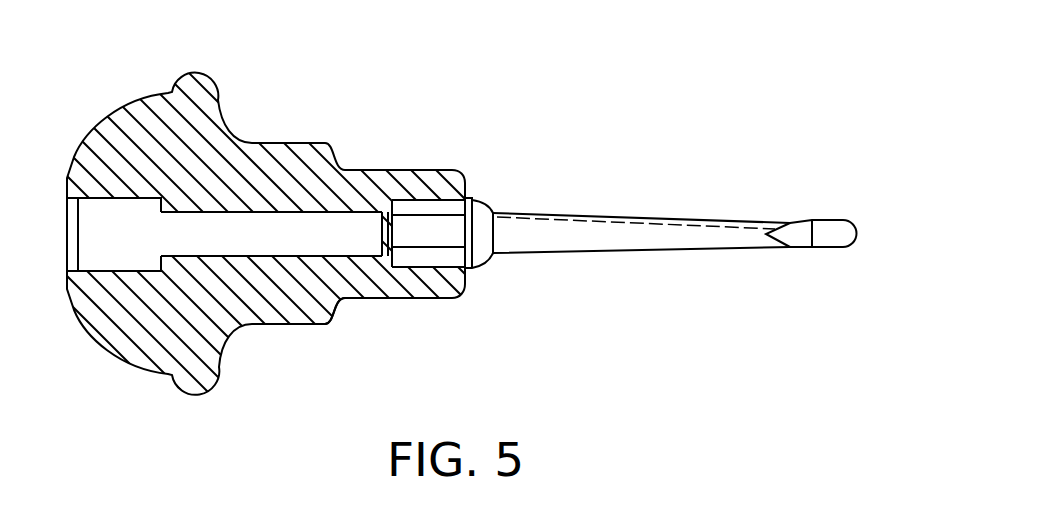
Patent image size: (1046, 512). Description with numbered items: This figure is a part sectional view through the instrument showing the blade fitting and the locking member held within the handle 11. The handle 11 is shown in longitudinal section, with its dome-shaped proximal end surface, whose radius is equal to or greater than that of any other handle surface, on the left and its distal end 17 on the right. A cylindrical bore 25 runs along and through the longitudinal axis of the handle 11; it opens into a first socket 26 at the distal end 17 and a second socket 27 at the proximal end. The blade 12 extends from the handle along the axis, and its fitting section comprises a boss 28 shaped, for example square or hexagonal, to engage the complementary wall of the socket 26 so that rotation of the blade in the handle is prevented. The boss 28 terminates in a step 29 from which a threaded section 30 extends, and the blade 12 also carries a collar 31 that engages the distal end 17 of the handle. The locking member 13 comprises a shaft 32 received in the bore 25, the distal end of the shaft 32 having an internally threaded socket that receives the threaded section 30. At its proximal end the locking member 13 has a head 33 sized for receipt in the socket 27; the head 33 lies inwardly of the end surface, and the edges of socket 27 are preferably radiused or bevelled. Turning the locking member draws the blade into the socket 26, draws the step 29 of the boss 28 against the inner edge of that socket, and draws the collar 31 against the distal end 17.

The handle 11 is at (167, 143).
The blade 12 is at (607, 228).
The locking member 13 is at (335, 252).
The distal end 17 is at (470, 283).
The cylindrical bore 25 is at (258, 216).
The first socket 26 is at (434, 264).
The second socket 27 is at (100, 265).
The boss 28 is at (445, 225).
The step 29 is at (381, 262).
The threaded section 30 is at (384, 216).
The collar 31 is at (483, 218).
The shaft 32 is at (250, 243).
The head 33 is at (102, 210).